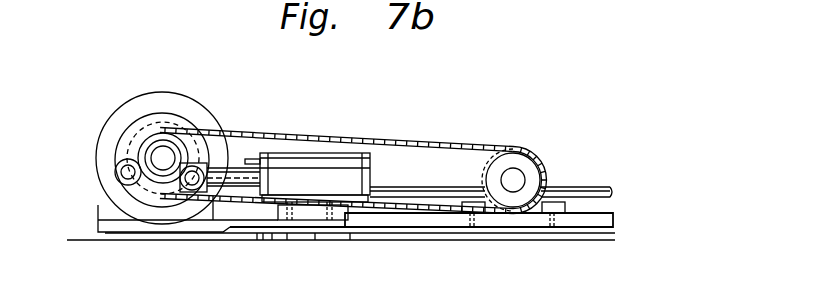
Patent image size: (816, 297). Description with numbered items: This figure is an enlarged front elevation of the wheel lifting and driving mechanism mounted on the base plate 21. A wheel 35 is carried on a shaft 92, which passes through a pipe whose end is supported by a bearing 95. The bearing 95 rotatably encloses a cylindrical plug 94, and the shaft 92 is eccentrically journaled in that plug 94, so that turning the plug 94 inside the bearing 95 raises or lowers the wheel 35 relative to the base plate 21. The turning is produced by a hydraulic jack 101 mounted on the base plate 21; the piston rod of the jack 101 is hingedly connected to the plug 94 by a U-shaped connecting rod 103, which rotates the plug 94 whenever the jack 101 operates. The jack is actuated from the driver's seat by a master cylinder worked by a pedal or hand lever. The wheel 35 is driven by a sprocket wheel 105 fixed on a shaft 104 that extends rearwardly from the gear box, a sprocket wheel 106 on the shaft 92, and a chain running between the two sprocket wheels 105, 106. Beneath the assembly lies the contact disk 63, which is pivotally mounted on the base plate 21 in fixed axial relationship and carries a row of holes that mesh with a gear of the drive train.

The base plate 21 is at (582, 218).
The wheel 35 is at (212, 115).
The contact disk 63 is at (563, 237).
The shaft 92 is at (163, 165).
The cylindrical plug 94 is at (142, 208).
The bearing 95 is at (100, 210).
The hydraulic jack 101 is at (315, 153).
The U-shaped connecting rod 103 is at (152, 118).
The shaft 104 is at (518, 172).
The sprocket wheel 105 is at (488, 150).
The sprocket wheel 106 is at (172, 124).